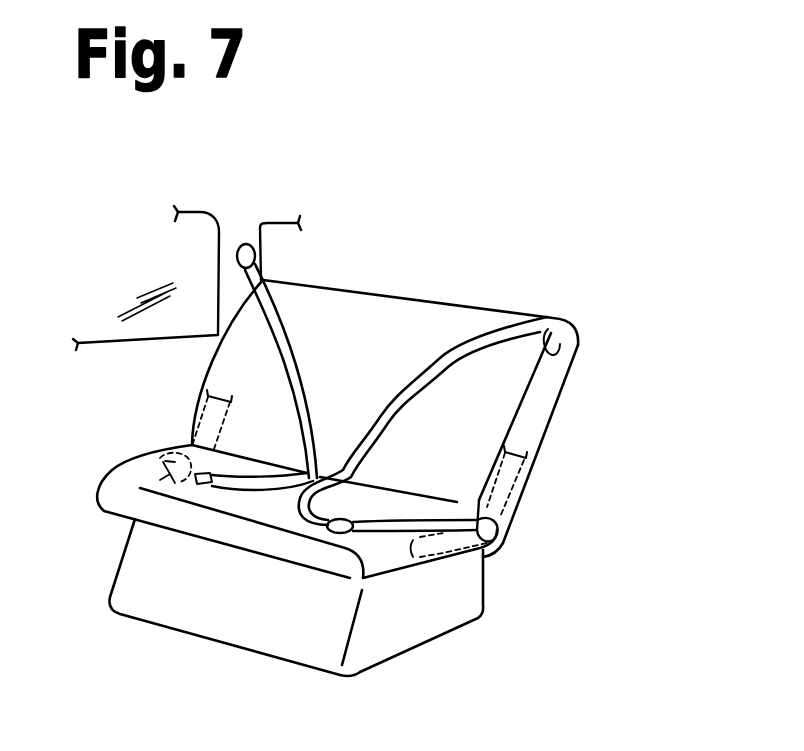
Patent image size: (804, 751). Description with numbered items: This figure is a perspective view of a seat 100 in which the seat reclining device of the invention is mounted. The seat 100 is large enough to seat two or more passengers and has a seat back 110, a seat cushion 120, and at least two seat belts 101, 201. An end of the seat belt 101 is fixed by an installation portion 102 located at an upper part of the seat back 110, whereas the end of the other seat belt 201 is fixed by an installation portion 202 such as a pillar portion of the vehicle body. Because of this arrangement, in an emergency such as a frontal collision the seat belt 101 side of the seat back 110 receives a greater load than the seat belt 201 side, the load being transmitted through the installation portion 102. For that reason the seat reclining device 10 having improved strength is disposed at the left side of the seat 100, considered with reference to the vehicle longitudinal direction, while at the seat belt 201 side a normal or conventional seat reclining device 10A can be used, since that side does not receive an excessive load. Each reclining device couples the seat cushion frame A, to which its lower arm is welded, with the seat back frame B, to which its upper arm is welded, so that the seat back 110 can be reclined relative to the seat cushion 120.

The seat reclining device 10 is at (495, 527).
The seat reclining device 10A is at (187, 452).
The seat 100 is at (396, 330).
The seat belt 101 is at (458, 337).
The installation portion 102 is at (556, 342).
The seat back 110 is at (545, 404).
The seat cushion 120 is at (123, 502).
The seat belt 201 is at (290, 322).
The installation portion 202 is at (254, 261).
The seat cushion frame A is at (128, 463).
The seat back frame B is at (213, 413).